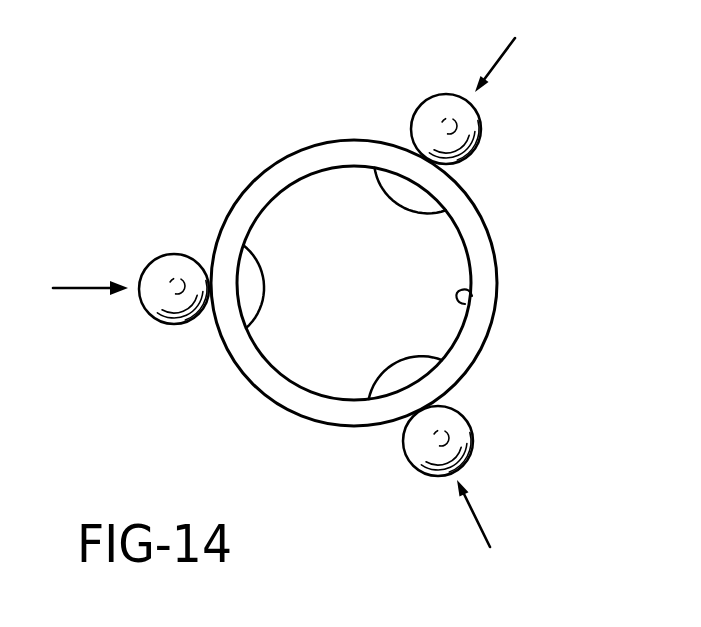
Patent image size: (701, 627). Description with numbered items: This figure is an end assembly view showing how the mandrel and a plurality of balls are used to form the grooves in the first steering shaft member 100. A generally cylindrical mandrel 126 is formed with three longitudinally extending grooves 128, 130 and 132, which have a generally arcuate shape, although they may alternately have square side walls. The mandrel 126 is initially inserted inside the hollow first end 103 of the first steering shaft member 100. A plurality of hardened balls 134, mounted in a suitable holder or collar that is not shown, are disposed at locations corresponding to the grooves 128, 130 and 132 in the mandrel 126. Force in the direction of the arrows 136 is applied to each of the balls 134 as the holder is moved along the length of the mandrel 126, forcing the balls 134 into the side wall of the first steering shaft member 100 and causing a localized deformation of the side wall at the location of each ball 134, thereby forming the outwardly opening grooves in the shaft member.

The first steering shaft member 100 is at (397, 269).
The hollow first end 103 is at (465, 304).
The mandrel 126 is at (442, 287).
The groove 128 is at (376, 190).
The groove 130 is at (381, 366).
The groove 132 is at (242, 312).
The hardened balls 134 is at (168, 254).
The arrows 136 is at (58, 288).